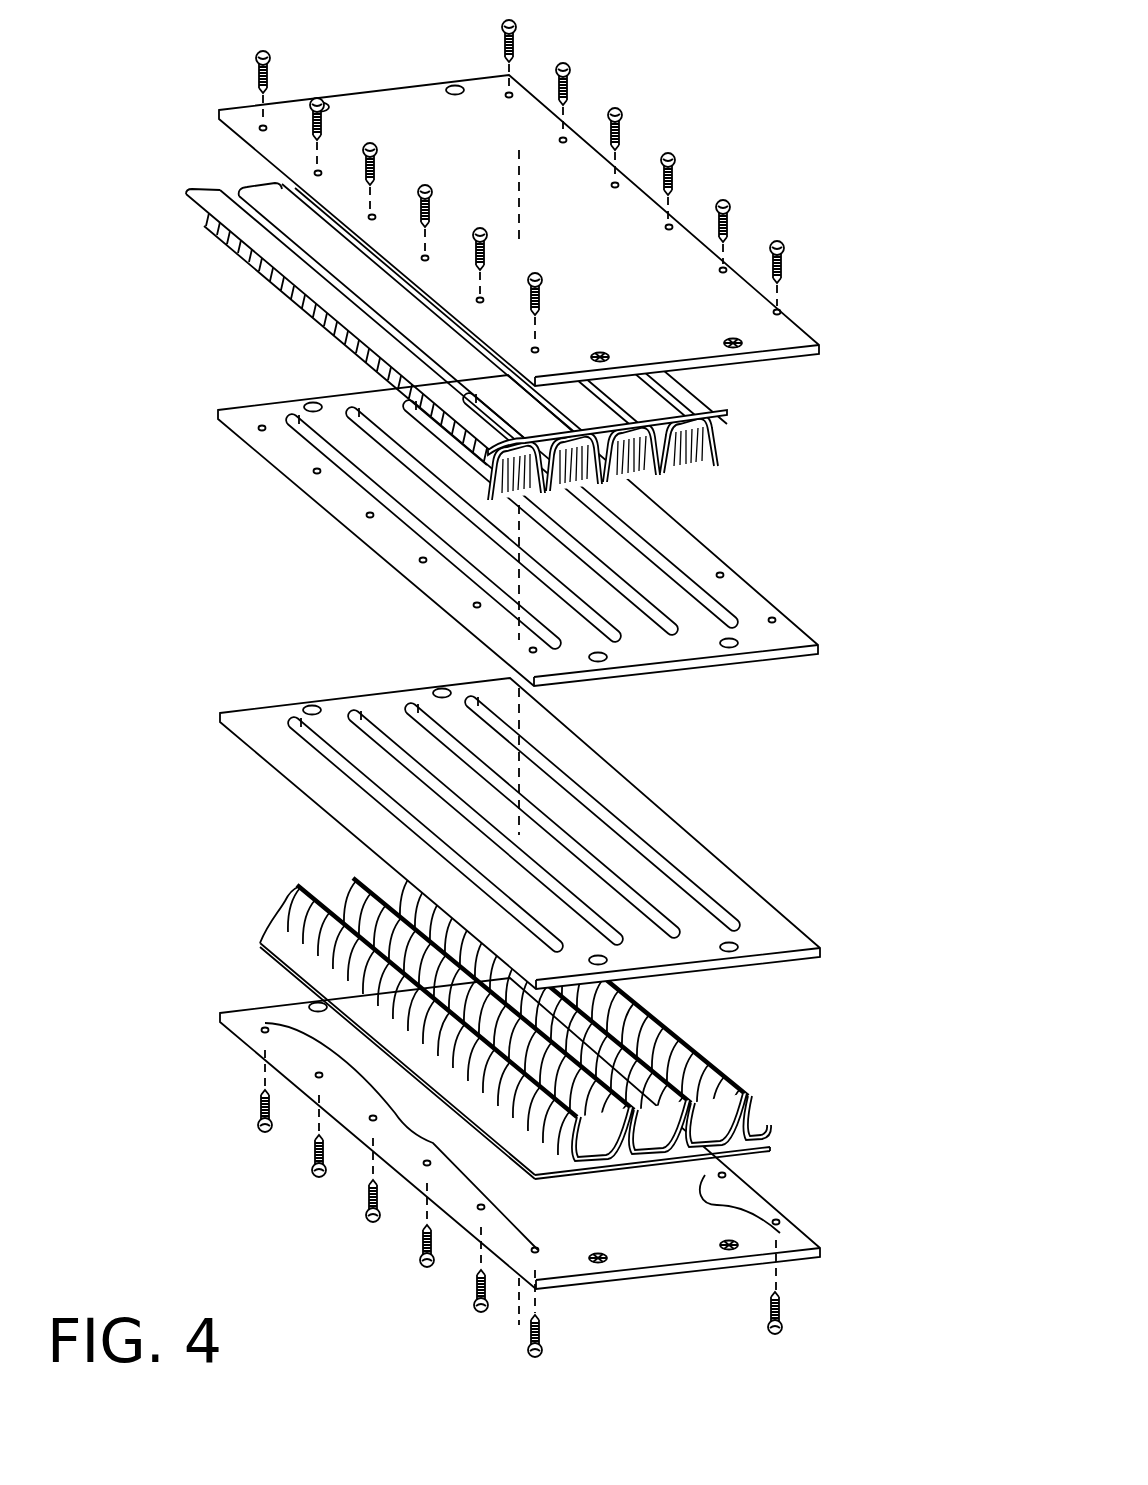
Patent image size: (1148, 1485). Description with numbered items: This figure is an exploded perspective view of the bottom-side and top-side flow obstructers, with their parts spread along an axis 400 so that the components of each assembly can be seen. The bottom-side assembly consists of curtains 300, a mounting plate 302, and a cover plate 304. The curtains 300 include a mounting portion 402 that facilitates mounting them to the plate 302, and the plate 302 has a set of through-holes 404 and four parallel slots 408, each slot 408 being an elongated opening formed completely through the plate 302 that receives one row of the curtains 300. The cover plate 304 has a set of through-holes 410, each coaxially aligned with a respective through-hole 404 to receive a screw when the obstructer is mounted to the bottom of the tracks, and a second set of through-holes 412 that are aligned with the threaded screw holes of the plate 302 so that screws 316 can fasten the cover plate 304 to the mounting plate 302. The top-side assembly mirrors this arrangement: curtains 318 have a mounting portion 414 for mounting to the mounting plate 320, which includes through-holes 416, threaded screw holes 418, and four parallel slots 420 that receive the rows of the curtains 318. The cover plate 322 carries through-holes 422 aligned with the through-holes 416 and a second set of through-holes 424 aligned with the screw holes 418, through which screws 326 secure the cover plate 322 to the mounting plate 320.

The curtains 300 is at (805, 1098).
The mounting plate 302 is at (821, 890).
The cover plate 304 is at (848, 1218).
The screws 316 is at (769, 1313).
The curtains 318 is at (813, 446).
The mounting plate 320 is at (823, 583).
The cover plate 322 is at (813, 172).
The screws 326 is at (542, 280).
The axis 400 is at (522, 699).
The mounting portion 402 is at (645, 1165).
The through-holes 404 is at (729, 947).
The parallel slots 408 is at (700, 867).
The through-holes 410 is at (729, 1245).
The through-holes 412 is at (707, 1177).
The mounting portion 414 is at (629, 411).
The through-holes 416 is at (729, 643).
The threaded screw holes 418 is at (422, 560).
The parallel slots 420 is at (700, 588).
The through-holes 422 is at (724, 340).
The through-holes 424 is at (668, 208).